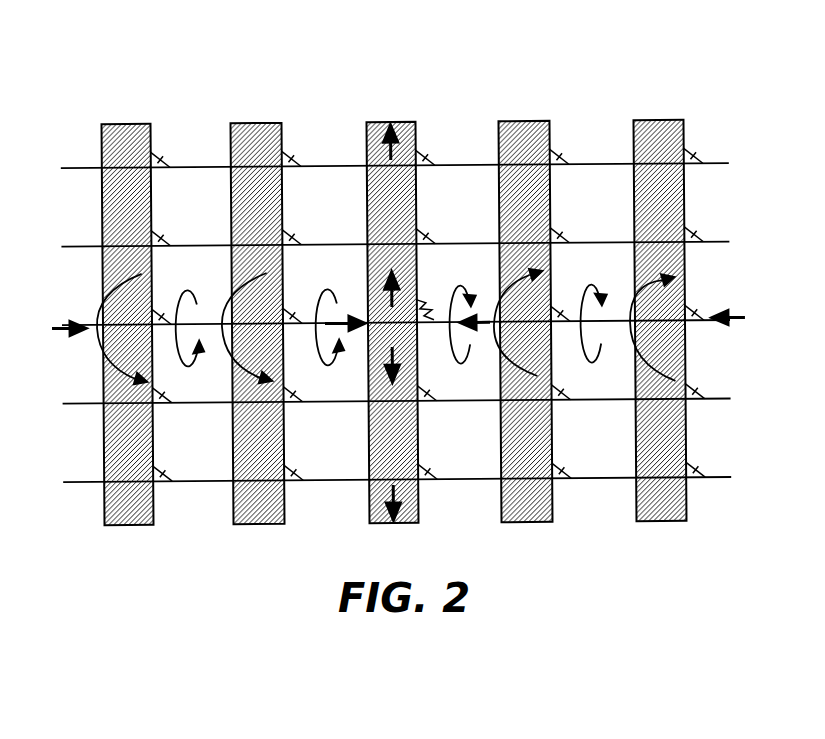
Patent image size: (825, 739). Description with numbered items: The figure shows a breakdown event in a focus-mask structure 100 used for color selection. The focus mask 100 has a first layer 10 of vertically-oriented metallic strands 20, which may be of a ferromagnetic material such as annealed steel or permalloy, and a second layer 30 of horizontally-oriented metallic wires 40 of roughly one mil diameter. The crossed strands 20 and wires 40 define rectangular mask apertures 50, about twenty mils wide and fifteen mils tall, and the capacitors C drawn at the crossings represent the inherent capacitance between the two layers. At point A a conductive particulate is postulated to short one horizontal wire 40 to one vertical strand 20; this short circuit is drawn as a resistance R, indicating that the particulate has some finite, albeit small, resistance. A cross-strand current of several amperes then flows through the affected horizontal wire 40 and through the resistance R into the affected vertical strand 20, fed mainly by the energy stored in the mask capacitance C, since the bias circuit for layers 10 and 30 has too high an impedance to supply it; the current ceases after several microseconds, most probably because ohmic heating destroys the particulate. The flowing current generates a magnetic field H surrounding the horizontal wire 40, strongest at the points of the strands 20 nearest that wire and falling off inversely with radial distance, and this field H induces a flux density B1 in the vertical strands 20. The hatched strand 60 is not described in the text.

The focus-mask structure 100 is at (388, 42).
The first layer 10 is at (216, 108).
The cathode electrode 60 is at (128, 169).
The vertical metallic strand 20 is at (400, 197).
The rectangular mask aperture 50 is at (322, 208).
The second layer 30 is at (80, 306).
The horizontal metallic wire 40 is at (95, 352).
The flux density B1 is at (232, 288).
The magnetic field H is at (176, 355).
The capacitor C is at (422, 157).
The resistance R is at (431, 301).
The point A is at (400, 330).